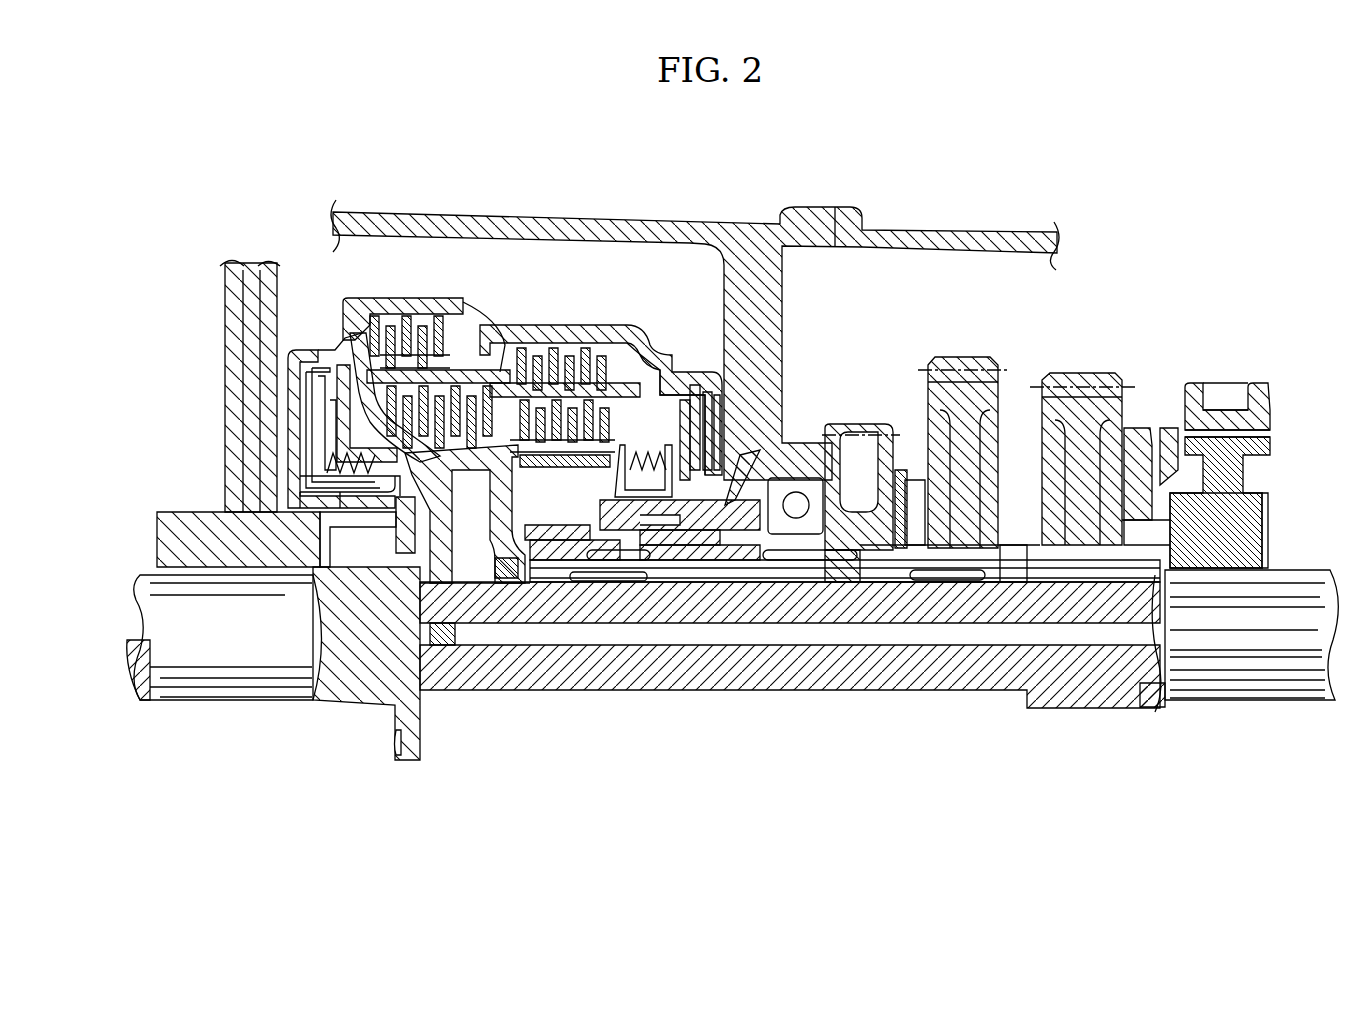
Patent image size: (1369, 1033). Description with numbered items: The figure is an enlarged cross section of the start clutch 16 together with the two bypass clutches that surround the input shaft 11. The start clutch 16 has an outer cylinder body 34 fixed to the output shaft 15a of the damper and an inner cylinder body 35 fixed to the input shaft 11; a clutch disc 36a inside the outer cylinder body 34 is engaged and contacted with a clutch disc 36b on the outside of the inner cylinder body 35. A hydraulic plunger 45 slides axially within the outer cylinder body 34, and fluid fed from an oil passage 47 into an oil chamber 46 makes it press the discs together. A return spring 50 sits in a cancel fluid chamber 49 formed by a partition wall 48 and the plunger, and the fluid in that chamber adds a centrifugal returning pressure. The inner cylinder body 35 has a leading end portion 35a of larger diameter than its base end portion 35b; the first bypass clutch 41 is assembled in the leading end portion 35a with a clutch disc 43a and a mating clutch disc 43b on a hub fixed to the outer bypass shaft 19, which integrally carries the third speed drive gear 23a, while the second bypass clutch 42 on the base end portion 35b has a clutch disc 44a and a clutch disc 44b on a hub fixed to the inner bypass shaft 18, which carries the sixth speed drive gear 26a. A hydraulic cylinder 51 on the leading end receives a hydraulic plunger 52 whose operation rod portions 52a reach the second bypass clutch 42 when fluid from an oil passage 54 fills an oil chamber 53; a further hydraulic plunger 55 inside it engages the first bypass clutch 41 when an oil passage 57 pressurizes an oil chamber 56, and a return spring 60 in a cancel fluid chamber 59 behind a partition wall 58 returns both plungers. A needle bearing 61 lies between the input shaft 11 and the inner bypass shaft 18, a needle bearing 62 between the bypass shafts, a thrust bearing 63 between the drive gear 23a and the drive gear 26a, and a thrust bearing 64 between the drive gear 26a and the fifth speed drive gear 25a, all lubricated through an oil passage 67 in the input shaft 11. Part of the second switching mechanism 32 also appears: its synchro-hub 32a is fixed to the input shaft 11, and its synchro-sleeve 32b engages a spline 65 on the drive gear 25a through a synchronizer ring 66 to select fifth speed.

The input shaft 11 is at (865, 650).
The output shaft of damper 15a is at (152, 628).
The start clutch 16 is at (392, 285).
The inner bypass shaft 18 is at (825, 570).
The outer bypass shaft 19 is at (735, 560).
The third speed drive gear 23a is at (855, 428).
The fifth speed drive gear 25a is at (1075, 385).
The sixth speed drive gear 26a is at (963, 370).
The second switching mechanism 32 is at (1252, 355).
The synchro-hub 32a is at (1265, 512).
The synchro-sleeve 32b is at (1270, 395).
The outer cylinder body 34 is at (365, 300).
The inner cylinder body 35 is at (537, 345).
The leading end portion 35a is at (618, 330).
The base end portion 35b is at (455, 372).
The clutch disc 36a is at (407, 318).
The clutch disc 36b is at (392, 330).
The first bypass clutch 41 is at (640, 318).
The second bypass clutch 42 is at (463, 345).
The clutch disc 43a is at (574, 352).
The clutch disc 43b is at (467, 470).
The clutch disc 44a is at (436, 660).
The clutch disc 44b is at (310, 497).
The hydraulic plunger 45 is at (322, 380).
The oil chamber 46 is at (340, 420).
The oil passage 47 is at (240, 312).
The partition wall 48 is at (320, 440).
The cancel fluid chamber 49 is at (300, 378).
The return spring 50 is at (330, 458).
The hydraulic cylinder 51 is at (652, 360).
The hydraulic plunger 52 is at (708, 430).
The operation rod portions 52a is at (508, 345).
The oil chamber 53 is at (717, 440).
The oil passage 54 is at (748, 458).
The hydraulic plunger 55 is at (700, 395).
The oil chamber 56 is at (700, 552).
The oil passage 57 is at (670, 540).
The partition wall 58 is at (560, 535).
The cancel fluid chamber 59 is at (683, 420).
The return spring 60 is at (640, 515).
The needle bearing 61 is at (615, 556).
The needle bearing 62 is at (622, 575).
The thrust bearing 63 is at (900, 470).
The thrust bearing 64 is at (1013, 585).
The spline 65 is at (1138, 428).
The synchronizer ring 66 is at (1170, 430).
The oil passage 67 is at (1085, 640).